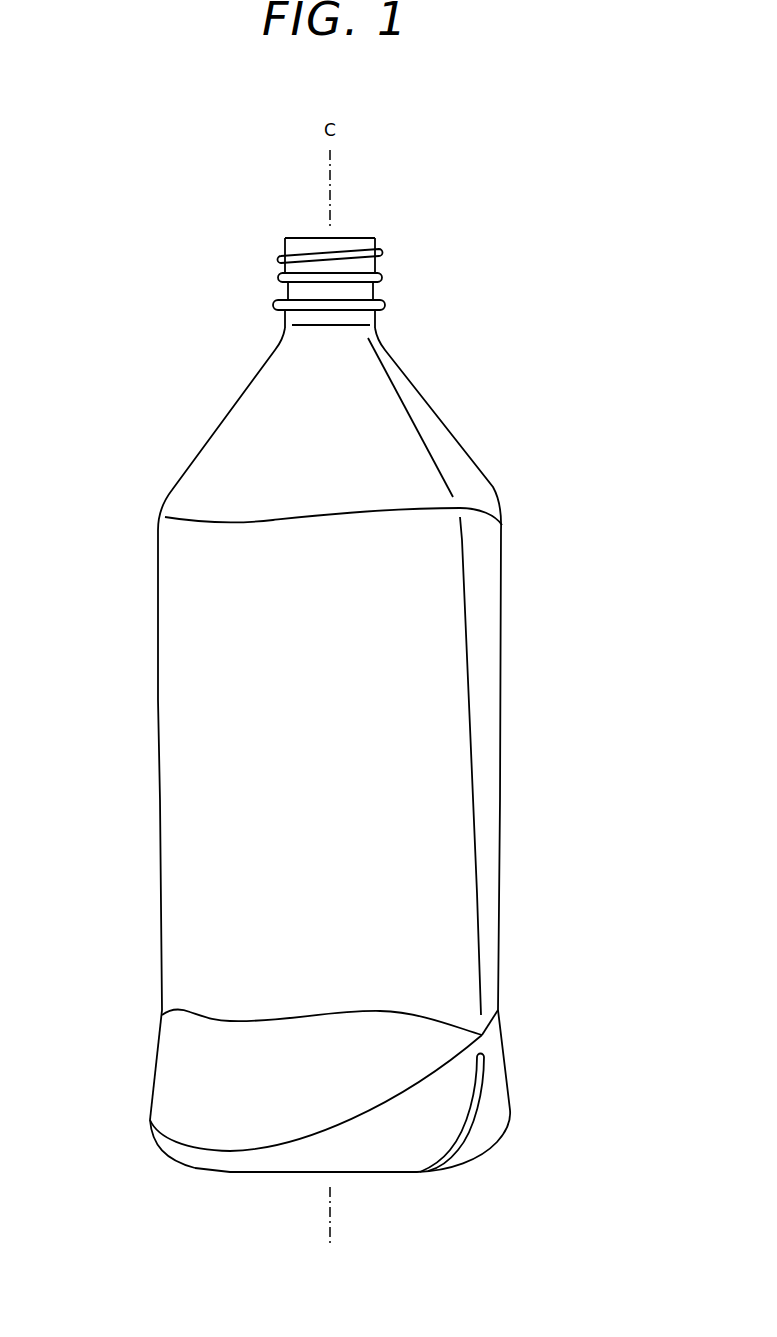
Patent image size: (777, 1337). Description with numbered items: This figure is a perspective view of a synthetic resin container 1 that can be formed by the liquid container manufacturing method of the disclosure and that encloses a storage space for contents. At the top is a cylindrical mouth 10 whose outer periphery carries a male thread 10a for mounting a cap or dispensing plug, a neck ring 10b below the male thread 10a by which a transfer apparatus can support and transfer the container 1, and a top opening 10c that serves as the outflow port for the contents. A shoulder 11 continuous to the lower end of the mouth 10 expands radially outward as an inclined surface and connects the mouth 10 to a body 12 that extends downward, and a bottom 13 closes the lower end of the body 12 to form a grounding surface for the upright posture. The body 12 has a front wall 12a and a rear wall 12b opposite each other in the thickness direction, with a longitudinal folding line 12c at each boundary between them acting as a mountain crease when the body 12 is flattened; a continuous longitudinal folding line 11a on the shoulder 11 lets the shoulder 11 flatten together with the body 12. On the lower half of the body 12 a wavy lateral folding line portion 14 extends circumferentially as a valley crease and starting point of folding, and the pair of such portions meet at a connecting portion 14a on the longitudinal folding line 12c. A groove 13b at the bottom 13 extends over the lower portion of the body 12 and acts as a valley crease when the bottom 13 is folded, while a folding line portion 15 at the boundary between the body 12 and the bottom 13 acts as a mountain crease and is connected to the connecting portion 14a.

The synthetic resin container 1 is at (562, 327).
The mouth 10 is at (381, 267).
The male thread 10a is at (378, 252).
The neck ring 10b is at (387, 305).
The top opening 10c is at (359, 236).
The shoulder 11 is at (445, 418).
The longitudinal folding line 11a is at (435, 452).
The body 12 is at (504, 683).
The front wall 12a is at (230, 712).
The rear wall 12b is at (493, 743).
The longitudinal folding line 12c is at (477, 880).
The bottom 13 is at (478, 1169).
The groove 13b is at (481, 1120).
The lateral folding line portion 14 is at (223, 1020).
The connecting portion 14a is at (485, 1033).
The folding line portion 15 is at (150, 1143).